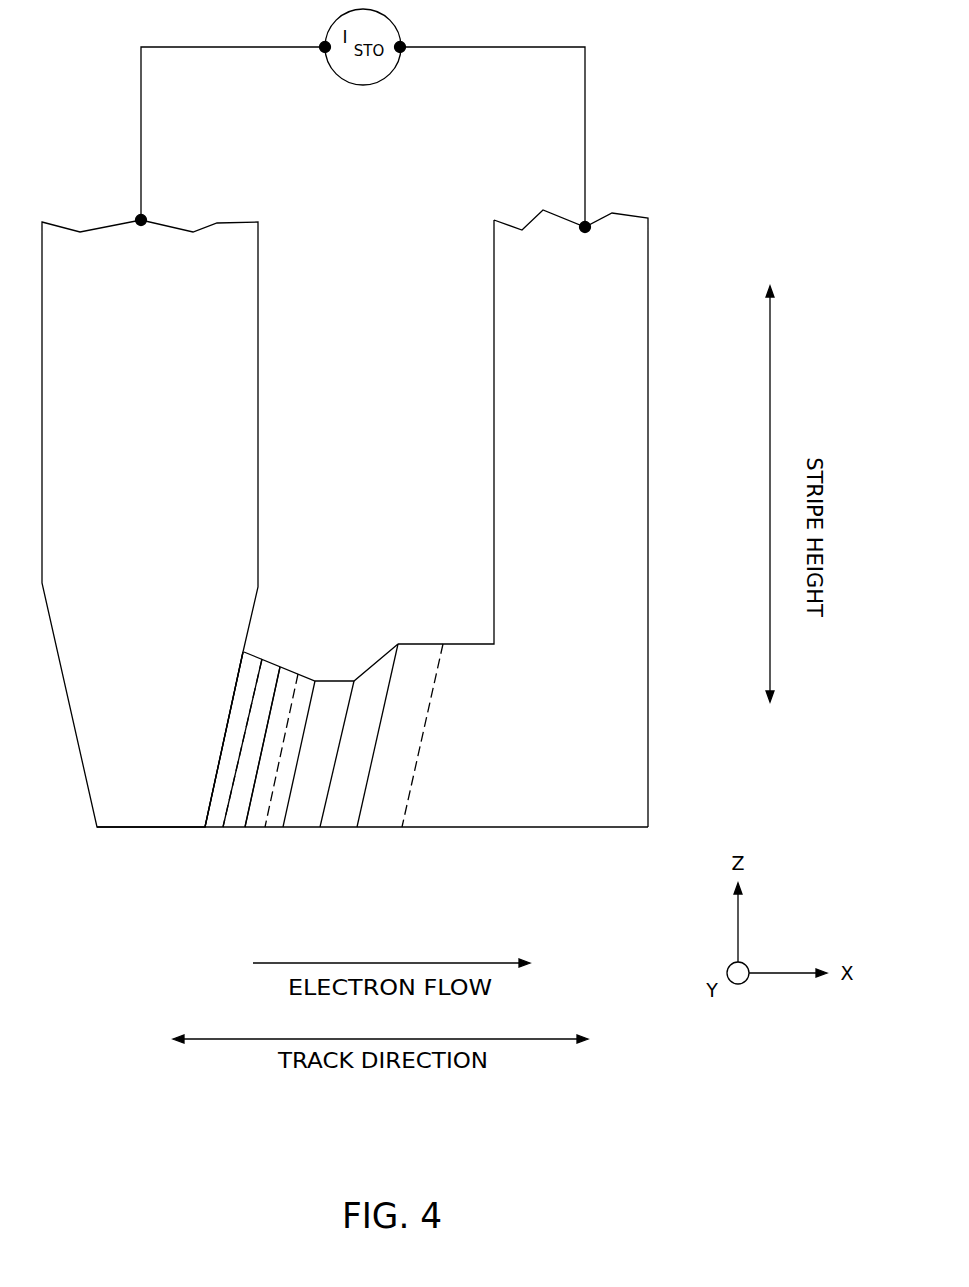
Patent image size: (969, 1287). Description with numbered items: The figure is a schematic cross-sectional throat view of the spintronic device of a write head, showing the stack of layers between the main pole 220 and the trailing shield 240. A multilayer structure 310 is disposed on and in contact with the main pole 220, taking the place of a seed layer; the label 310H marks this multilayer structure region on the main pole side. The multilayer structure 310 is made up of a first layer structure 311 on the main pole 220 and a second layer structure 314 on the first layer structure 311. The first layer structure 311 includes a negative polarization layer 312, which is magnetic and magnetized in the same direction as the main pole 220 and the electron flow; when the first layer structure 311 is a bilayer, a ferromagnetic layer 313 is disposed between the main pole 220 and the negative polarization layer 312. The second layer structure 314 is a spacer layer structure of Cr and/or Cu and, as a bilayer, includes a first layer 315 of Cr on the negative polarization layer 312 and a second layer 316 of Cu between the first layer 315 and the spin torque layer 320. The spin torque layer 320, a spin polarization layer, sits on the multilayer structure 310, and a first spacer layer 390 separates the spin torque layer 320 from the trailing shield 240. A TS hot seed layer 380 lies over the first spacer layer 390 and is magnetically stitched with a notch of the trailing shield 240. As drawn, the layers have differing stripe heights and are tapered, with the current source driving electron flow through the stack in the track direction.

The main pole 220 is at (123, 490).
The trailing shield 240 is at (547, 491).
The multilayer structure 310 is at (292, 640).
The spin torque oscillator height 310H is at (170, 739).
The first layer structure 311 is at (265, 652).
The negative polarization layer 312 is at (233, 813).
The ferromagnetic layer 313 is at (216, 815).
The second layer structure 314 is at (302, 666).
The first layer 315 is at (255, 812).
The second layer 316 is at (275, 812).
The spin torque layer 320 is at (302, 810).
The TS hot seed layer 380 is at (378, 810).
The first spacer layer 390 is at (340, 810).